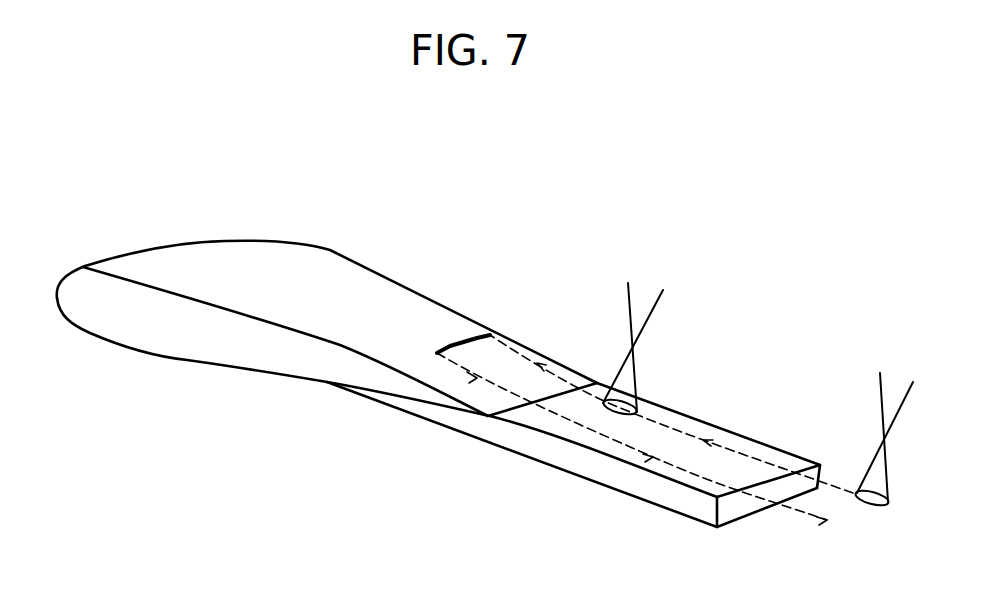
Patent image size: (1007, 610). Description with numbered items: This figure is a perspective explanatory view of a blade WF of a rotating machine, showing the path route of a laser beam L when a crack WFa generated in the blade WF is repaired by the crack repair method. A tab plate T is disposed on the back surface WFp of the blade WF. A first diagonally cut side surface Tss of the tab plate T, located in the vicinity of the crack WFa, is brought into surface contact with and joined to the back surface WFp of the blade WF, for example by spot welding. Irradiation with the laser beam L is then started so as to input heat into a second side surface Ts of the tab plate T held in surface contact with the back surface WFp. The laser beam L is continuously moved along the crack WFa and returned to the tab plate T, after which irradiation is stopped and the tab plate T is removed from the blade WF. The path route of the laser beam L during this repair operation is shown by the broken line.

The blade WF is at (387, 334).
The crack WFa is at (467, 337).
The back surface WFp is at (410, 402).
The first diagonally cut side surface Tss is at (362, 385).
The tab plate T is at (573, 483).
The second side surface Ts is at (733, 508).
The laser beam L is at (630, 318).